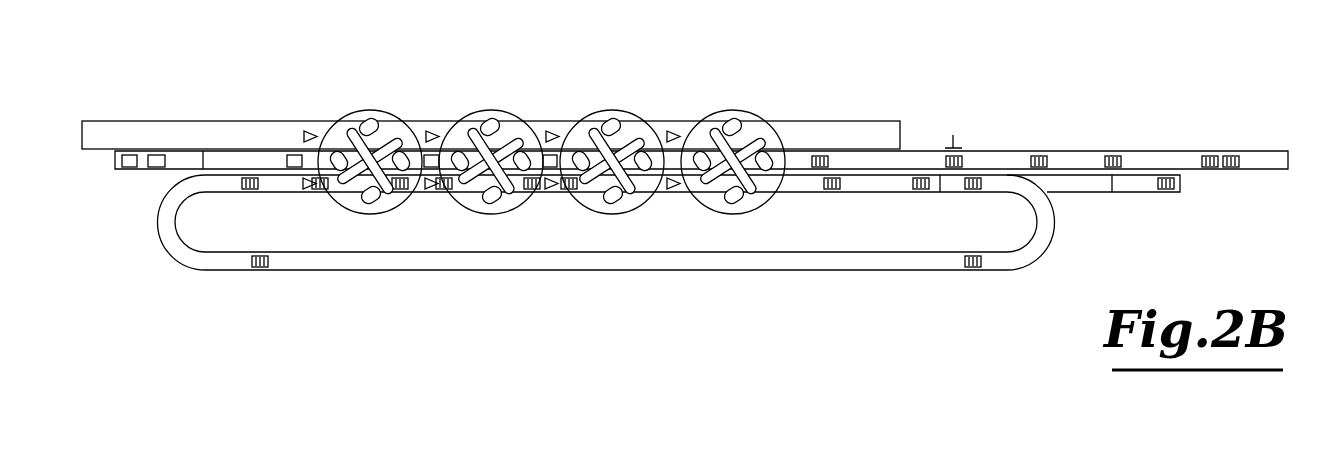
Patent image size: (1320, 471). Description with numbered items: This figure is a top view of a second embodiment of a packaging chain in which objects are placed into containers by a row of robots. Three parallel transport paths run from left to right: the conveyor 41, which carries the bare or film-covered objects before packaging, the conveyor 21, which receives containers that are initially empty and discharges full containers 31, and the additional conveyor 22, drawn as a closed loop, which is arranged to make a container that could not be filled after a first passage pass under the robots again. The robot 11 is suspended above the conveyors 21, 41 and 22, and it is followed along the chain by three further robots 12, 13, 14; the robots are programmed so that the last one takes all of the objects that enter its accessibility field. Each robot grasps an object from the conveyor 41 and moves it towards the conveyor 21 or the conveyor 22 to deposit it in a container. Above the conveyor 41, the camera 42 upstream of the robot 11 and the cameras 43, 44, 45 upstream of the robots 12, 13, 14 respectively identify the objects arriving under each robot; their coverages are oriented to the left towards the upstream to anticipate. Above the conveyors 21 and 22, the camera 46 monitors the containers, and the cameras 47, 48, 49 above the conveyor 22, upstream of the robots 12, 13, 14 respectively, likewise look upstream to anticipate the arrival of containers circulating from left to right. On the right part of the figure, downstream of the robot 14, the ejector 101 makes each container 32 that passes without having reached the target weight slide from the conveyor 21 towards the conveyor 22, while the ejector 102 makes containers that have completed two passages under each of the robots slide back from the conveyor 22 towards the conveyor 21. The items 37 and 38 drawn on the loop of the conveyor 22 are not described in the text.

The robot 11 is at (373, 109).
The robot 12 is at (494, 109).
The robot 13 is at (616, 109).
The robot 14 is at (737, 109).
The conveyor 21 is at (143, 170).
The additional conveyor 22 is at (180, 271).
The containers 31 is at (1037, 151).
The container 32 is at (962, 161).
The carrier on belt loop 37 is at (250, 192).
The carrier on belt loop return run 38 is at (973, 270).
The conveyor 41 is at (131, 120).
The camera 42 is at (315, 131).
The camera 43 is at (436, 131).
The camera 44 is at (557, 131).
The camera 45 is at (680, 131).
The camera 46 is at (313, 192).
The camera 47 is at (433, 191).
The camera 48 is at (554, 191).
The camera 49 is at (673, 191).
The ejector 101 is at (954, 135).
The ejector 102 is at (1167, 196).